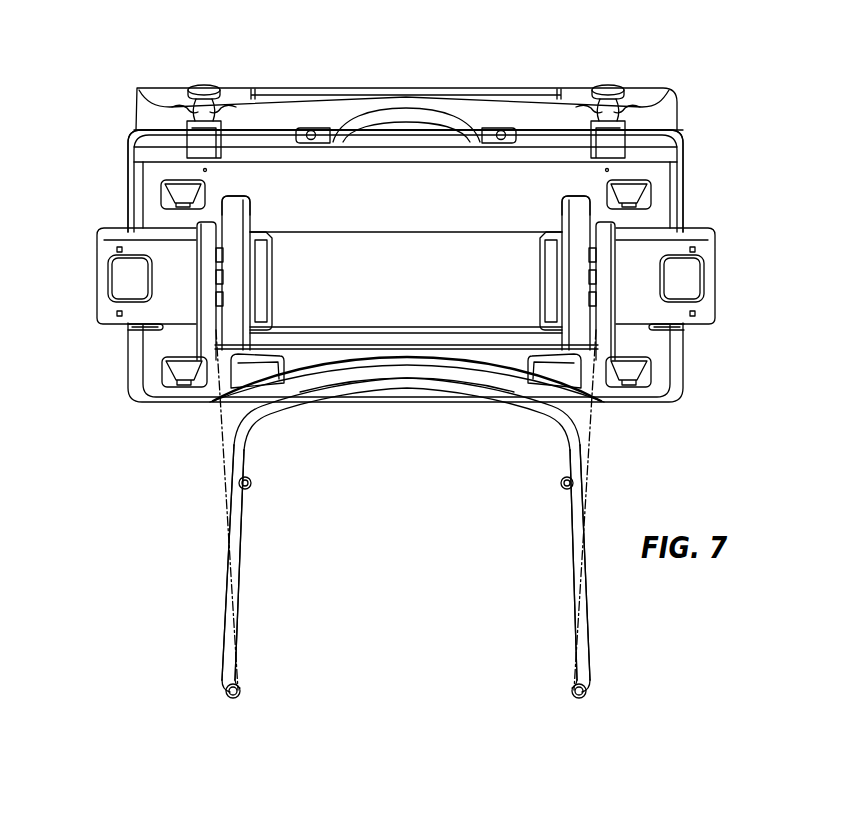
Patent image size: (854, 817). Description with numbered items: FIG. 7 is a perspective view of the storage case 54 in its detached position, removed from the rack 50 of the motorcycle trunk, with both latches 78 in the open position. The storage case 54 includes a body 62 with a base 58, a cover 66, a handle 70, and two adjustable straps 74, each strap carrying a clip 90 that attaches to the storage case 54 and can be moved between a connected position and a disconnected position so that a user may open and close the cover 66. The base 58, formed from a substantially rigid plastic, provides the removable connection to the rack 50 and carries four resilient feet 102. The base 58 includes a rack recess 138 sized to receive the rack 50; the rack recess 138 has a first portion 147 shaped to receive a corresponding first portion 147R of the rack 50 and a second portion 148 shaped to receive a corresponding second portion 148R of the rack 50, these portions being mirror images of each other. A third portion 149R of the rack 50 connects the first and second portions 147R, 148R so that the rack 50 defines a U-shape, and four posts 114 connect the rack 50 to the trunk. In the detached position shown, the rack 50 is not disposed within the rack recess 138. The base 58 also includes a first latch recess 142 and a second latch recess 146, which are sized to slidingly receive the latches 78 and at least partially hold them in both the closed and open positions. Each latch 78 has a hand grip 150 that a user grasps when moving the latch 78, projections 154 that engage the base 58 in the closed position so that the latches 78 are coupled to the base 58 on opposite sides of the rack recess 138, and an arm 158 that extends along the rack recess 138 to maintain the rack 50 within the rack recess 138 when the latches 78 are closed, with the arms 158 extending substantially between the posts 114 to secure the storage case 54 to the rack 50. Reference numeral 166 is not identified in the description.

The storage case 54 is at (60, 58).
The base 58 is at (685, 190).
The body 62 is at (660, 113).
The cover 66 is at (276, 94).
The handle 70 is at (408, 118).
The adjustable strap 74 is at (604, 85).
The clip 90 is at (229, 108).
The resilient feet 102 is at (726, 132).
The rack recess 138 is at (576, 202).
The second portion 148 is at (236, 224).
The first portion 147 is at (575, 224).
The arm 158 is at (738, 204).
The projection 154 is at (260, 307).
The right clip assembly 166 is at (552, 307).
The latch 78 is at (743, 242).
The hand grip 150 is at (745, 282).
The first latch recess 142 is at (134, 322).
The second latch recess 146 is at (638, 323).
The rack 50 is at (334, 392).
The third portion 149R is at (430, 389).
The second portion 148R is at (234, 592).
The first portion 147R is at (582, 606).
The post 114 is at (572, 694).